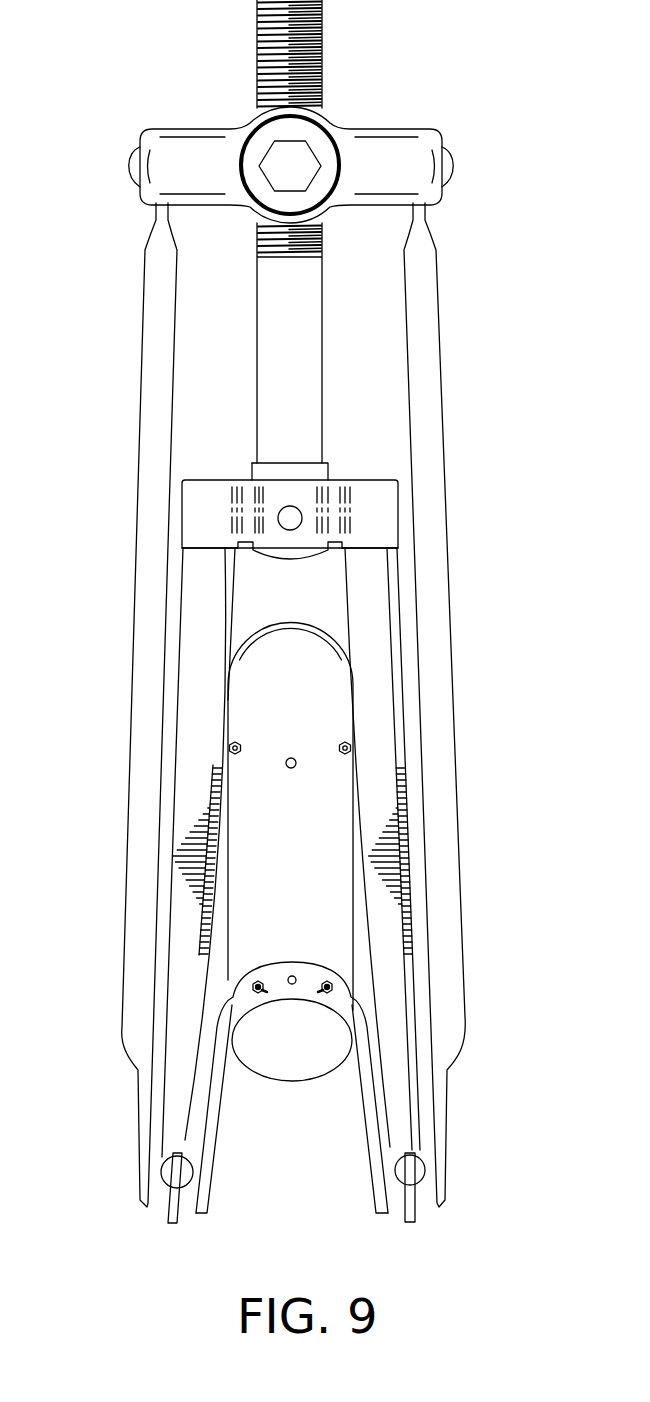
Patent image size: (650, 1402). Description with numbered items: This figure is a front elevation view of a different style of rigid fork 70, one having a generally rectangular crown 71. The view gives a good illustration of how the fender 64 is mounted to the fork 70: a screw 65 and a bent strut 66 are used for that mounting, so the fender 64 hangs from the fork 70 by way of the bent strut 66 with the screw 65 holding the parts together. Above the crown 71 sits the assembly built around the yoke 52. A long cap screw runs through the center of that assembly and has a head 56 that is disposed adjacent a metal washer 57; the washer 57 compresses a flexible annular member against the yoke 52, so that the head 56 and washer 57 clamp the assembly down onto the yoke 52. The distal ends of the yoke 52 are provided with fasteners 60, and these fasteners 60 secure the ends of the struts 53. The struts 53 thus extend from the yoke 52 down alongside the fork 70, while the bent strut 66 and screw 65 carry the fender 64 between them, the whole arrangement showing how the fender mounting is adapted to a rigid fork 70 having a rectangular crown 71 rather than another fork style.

The yoke 52 is at (395, 148).
The struts 53 is at (155, 317).
The head 56 is at (288, 162).
The metal washer 57 is at (253, 173).
The fasteners 60 is at (442, 167).
The fender 64 is at (290, 625).
The screw 65 is at (237, 755).
The bent strut 66 is at (282, 990).
The rigid fork 70 is at (219, 449).
The crown 71 is at (347, 482).